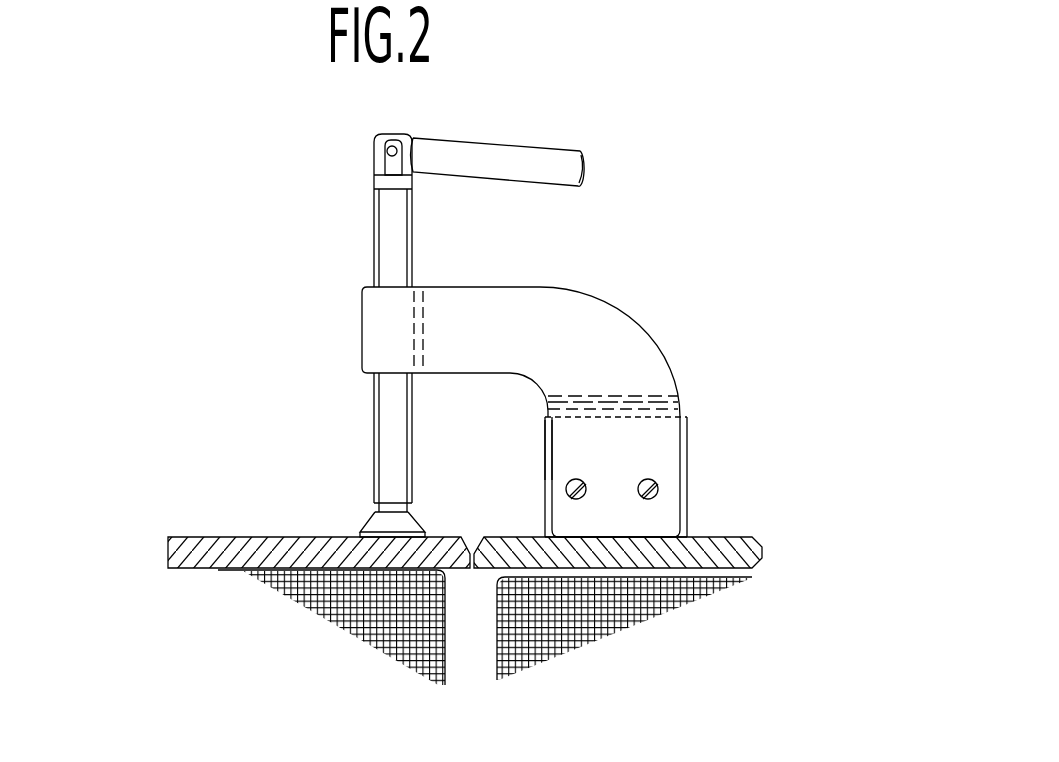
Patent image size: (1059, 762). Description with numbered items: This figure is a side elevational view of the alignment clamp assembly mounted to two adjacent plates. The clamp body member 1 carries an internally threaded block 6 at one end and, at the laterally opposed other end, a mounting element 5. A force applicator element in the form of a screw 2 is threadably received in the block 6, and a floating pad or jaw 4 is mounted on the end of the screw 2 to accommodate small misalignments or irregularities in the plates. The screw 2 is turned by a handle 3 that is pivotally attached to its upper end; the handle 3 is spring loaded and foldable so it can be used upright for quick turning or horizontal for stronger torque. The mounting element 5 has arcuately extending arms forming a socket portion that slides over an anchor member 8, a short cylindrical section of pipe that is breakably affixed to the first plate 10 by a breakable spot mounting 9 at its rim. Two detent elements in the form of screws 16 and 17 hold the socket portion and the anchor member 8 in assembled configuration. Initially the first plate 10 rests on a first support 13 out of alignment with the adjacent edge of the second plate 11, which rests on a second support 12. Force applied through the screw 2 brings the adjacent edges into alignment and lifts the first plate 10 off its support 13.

The clamp body member 1 is at (647, 315).
The screw 2 is at (373, 235).
The handle 3 is at (542, 147).
The floating pad or jaw 4 is at (367, 518).
The mounting element 5 is at (685, 467).
The internally threaded block 6 is at (362, 327).
The anchor member 8 is at (545, 443).
The breakable spot mounting 9 is at (545, 537).
The first plate 10 is at (760, 541).
The second plate 11 is at (210, 553).
The second support 12 is at (367, 610).
The first support 13 is at (590, 608).
The screw 16 is at (658, 487).
The screw 17 is at (583, 484).